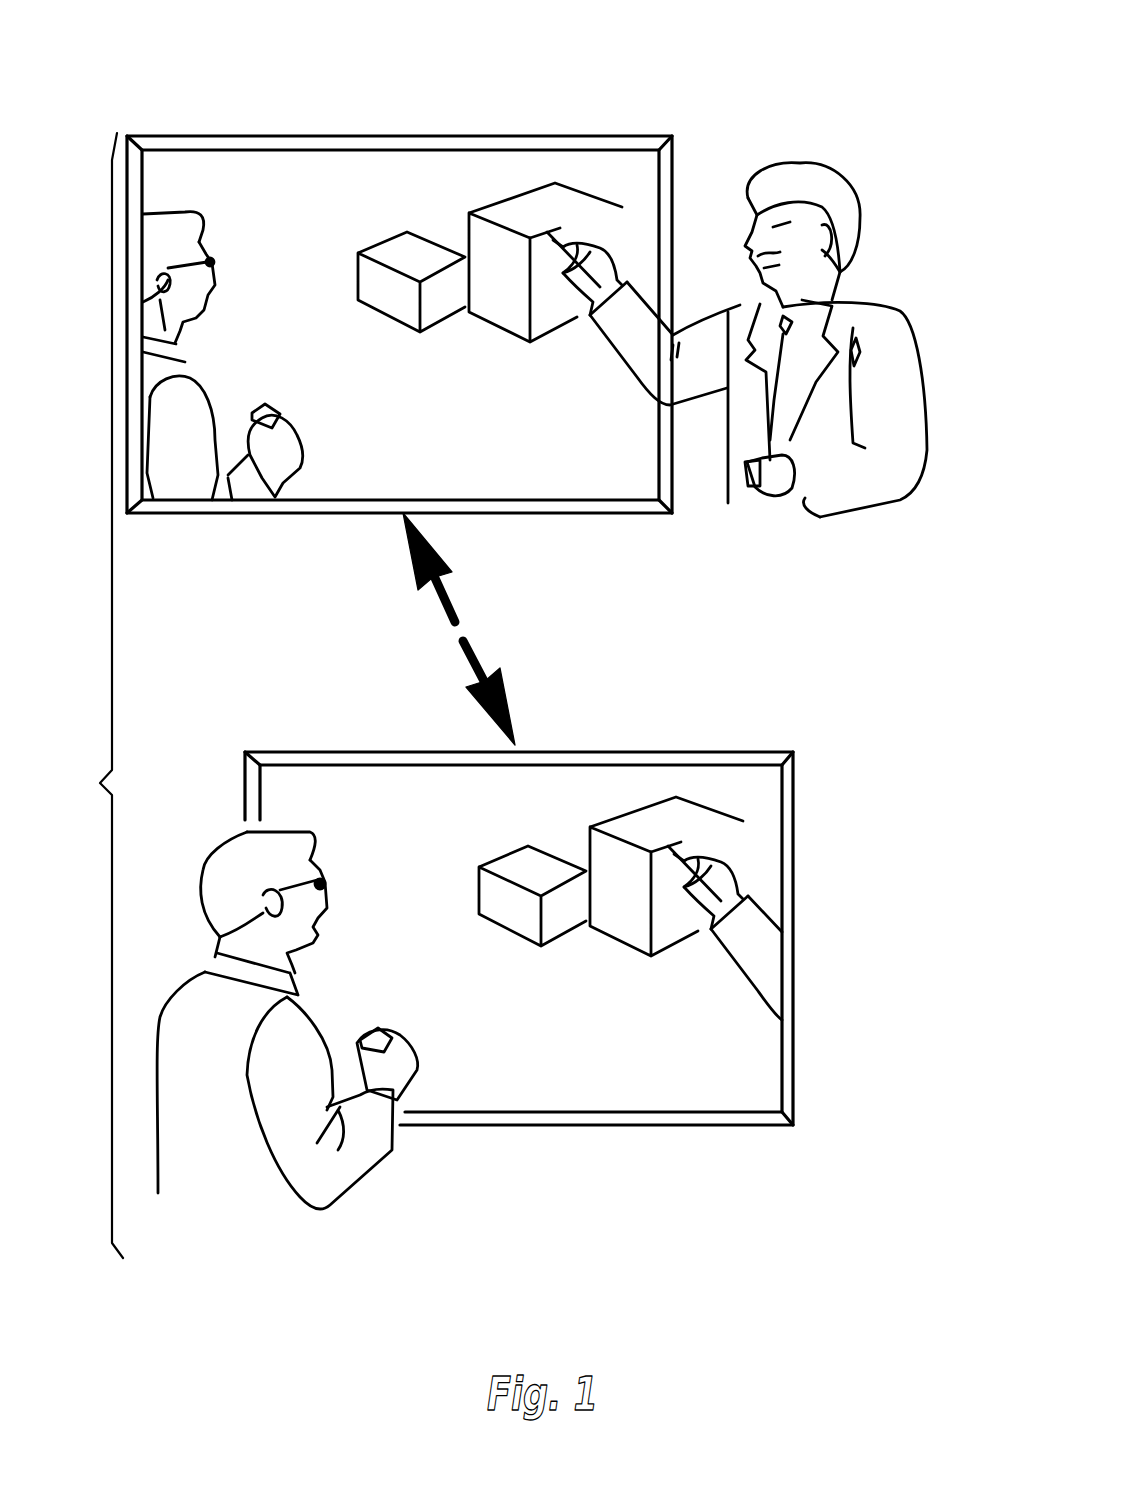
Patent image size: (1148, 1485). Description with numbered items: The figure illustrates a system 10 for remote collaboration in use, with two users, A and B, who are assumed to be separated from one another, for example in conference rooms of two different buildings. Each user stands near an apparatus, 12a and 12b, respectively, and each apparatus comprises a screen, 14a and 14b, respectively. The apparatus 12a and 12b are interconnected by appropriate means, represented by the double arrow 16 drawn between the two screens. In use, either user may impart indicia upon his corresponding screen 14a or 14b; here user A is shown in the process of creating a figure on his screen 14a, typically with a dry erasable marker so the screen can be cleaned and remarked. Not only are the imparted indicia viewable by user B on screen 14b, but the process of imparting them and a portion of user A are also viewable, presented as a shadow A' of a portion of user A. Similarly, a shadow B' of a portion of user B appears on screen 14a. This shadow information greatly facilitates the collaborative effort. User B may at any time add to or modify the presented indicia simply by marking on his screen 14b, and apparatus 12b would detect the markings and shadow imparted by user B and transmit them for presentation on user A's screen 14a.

The system 10 is at (848, 1221).
The apparatus 12a is at (684, 84).
The apparatus 12b is at (280, 733).
The screen 14a is at (302, 136).
The screen 14b is at (690, 752).
The double arrow 16 is at (448, 597).
The user A is at (738, 347).
The user B is at (287, 1032).
The shadow of a portion of user A A' is at (725, 933).
The shadow of a portion of user B B' is at (223, 356).